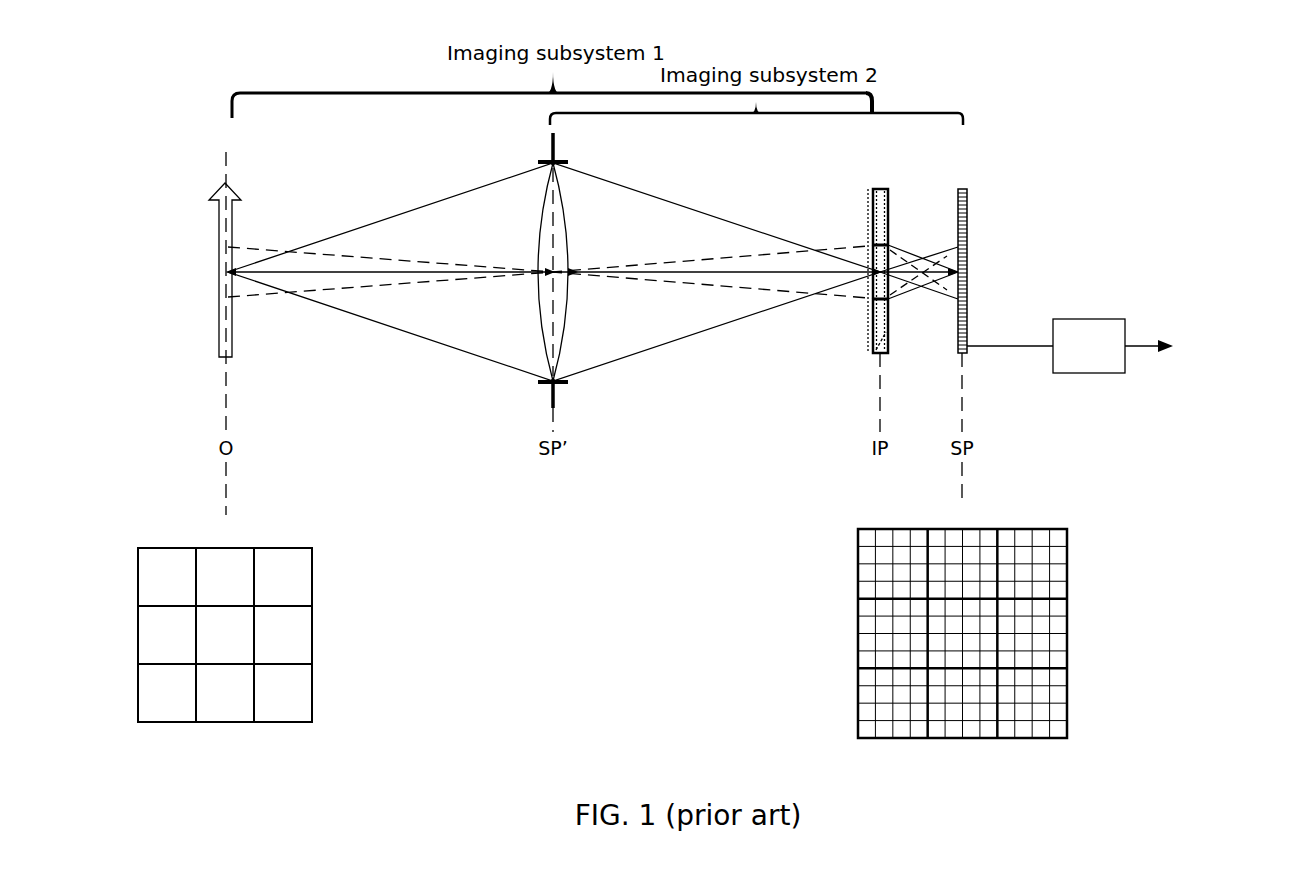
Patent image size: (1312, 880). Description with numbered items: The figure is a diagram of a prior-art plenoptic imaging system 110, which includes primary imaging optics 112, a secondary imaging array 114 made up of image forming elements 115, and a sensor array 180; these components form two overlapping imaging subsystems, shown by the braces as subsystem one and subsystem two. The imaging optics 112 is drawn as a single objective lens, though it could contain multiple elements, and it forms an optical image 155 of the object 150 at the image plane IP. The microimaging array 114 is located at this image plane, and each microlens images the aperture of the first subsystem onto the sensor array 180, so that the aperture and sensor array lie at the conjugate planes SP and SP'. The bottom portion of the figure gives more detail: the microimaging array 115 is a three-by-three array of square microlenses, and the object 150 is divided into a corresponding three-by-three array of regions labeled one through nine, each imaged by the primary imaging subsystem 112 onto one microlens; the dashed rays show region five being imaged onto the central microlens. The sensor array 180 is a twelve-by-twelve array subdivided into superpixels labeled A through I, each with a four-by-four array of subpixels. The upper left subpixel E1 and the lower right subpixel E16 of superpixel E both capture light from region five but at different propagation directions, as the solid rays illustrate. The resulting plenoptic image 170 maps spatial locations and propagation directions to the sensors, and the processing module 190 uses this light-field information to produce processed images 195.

The plenoptic imaging system 110 is at (1012, 171).
The primary imaging optics 112 is at (543, 205).
The secondary imaging array 114 is at (899, 189).
The image forming elements 115 is at (866, 228).
The object 150 is at (233, 222).
The optical image 155 is at (868, 323).
The plenoptic image 170 is at (948, 248).
The sensor array 180 is at (967, 215).
The processing module 190 is at (1046, 346).
The processed images 195 is at (1210, 345).
The upper left subpixel E1 is at (937, 610).
The lower right subpixel E16 is at (983, 663).